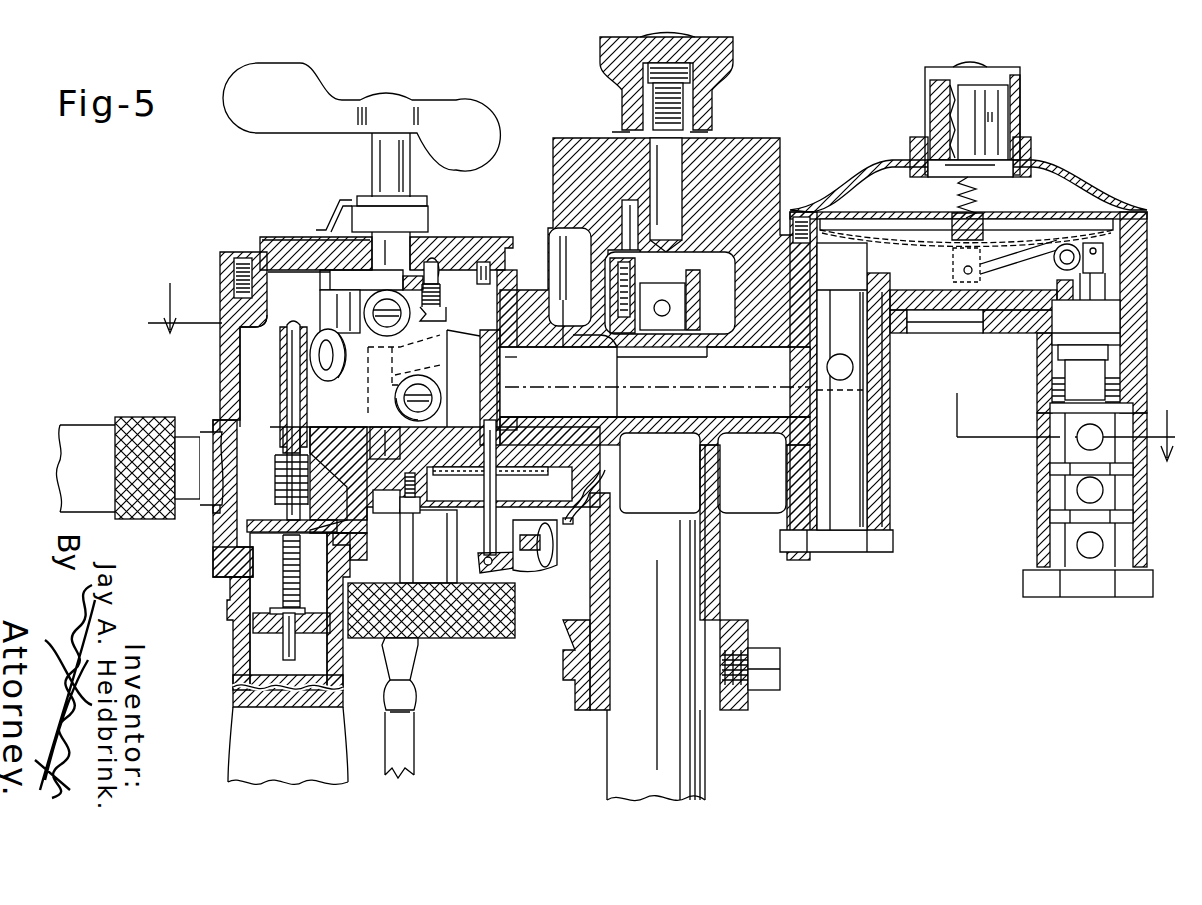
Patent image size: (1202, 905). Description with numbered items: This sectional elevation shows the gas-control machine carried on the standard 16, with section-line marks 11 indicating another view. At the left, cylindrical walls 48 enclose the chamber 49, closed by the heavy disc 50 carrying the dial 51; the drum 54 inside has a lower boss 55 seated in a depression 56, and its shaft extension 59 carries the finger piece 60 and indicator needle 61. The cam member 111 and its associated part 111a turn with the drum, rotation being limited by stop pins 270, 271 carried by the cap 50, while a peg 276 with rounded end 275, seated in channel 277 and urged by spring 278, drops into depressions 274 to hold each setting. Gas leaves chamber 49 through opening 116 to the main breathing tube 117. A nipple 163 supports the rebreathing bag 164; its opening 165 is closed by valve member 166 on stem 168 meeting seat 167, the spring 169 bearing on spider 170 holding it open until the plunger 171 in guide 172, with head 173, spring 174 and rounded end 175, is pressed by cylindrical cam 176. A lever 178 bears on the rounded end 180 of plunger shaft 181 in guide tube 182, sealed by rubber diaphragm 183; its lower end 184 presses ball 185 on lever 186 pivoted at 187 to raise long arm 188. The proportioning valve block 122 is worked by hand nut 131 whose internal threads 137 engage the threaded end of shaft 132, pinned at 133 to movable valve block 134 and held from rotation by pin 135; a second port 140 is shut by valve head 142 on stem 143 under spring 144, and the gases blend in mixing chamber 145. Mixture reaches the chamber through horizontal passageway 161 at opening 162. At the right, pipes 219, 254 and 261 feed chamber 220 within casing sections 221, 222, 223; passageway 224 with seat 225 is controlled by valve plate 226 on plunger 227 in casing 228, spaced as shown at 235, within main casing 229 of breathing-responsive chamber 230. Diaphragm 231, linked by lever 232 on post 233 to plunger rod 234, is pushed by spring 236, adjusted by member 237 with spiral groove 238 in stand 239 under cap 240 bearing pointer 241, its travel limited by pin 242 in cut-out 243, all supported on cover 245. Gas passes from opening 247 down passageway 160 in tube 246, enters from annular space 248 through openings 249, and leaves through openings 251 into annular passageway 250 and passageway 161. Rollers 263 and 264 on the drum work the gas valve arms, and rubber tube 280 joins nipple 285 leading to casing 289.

The section line 11- 11 is at (658, 384).
The standard 16 is at (690, 748).
The cylindrical walls 48 is at (220, 300).
The chamber 49 is at (240, 376).
The closure disc 50 is at (266, 246).
The dial 51 is at (293, 237).
The drum 54 is at (434, 375).
The lower boss 55 is at (385, 440).
The supporting depression 56 is at (402, 510).
The shaft extension 59 is at (375, 153).
The operating finger piece 60 is at (302, 80).
The indicator needle 61 is at (334, 202).
The cam member 111 is at (333, 272).
The valve block 111a is at (325, 303).
The opening 116 is at (210, 432).
The main breathing tube 117 is at (198, 516).
The valve block 122 is at (778, 149).
The hand nut 131 is at (735, 45).
The shaft 132 is at (684, 152).
The pin 133 is at (675, 313).
The valve block 134 is at (715, 300).
The pin 135 is at (692, 95).
The internal threads 137 is at (692, 78).
The second port 140 is at (625, 215).
The valve head 142 is at (612, 233).
The valve stem 143 is at (592, 272).
The spring 144 is at (594, 288).
The mixing chamber 145 is at (705, 326).
The vertical passageway 160 is at (855, 464).
The horizontal passageway 161 is at (758, 415).
The opening 162 is at (572, 352).
The nipple 163 is at (262, 597).
The rebreathing bag 164 is at (232, 745).
The opening 165 is at (235, 553).
The valve member 166 is at (320, 520).
The valve seat 167 is at (350, 540).
The valve stem 168 is at (285, 640).
The spring 169 is at (262, 613).
The spider 170 is at (307, 630).
The plunger 171 is at (290, 408).
The guide 172 is at (281, 390).
The head 173 is at (278, 462).
The spring 174 is at (278, 493).
The rounded end 175 is at (284, 326).
The cylindrical cam member 176 is at (400, 322).
The lever 178 is at (494, 322).
The rounded end 180 is at (440, 348).
The plunger shaft 181 is at (508, 377).
The guide tube 182 is at (508, 393).
The rubber diaphragm 183 is at (555, 472).
The lower end 184 is at (482, 555).
The ball 185 is at (508, 567).
The lever 186 is at (550, 568).
The pivot 187 is at (560, 552).
The long arm 188 is at (565, 543).
The pipe 219 is at (1080, 437).
The chamber 220 is at (1050, 507).
The casing section 221 is at (1040, 413).
The casing section 222 is at (1040, 474).
The casing section 223 is at (1033, 567).
The passageway 224 is at (1048, 372).
The annular valve seat 225 is at (1050, 369).
The valve plate 226 is at (1055, 354).
The plunger 227 is at (1055, 339).
The cylindrical casing 228 is at (1055, 323).
The main casing 229 is at (820, 250).
The breathing-responsive valve chamber 230 is at (924, 325).
The diaphragm 231 is at (1090, 233).
The lever 232 is at (1018, 248).
The post 233 is at (953, 258).
The plunger rod 234 is at (1100, 240).
The spacing 235 is at (1060, 300).
The spring 236 is at (958, 197).
The adjusting member 237 is at (1017, 84).
The spiral groove 238 is at (950, 105).
The cylindrical stand 239 is at (945, 92).
The cap 240 is at (938, 67).
The pointer 241 is at (915, 128).
The pin 242 is at (992, 118).
The cut-out portion 243 is at (990, 108).
The cover construction 245 is at (1058, 170).
The tubular casing 246 is at (877, 367).
The upper opening 247 is at (835, 275).
The annular space 248 is at (880, 498).
The openings 249 is at (870, 483).
The second annular passageway 250 is at (880, 400).
The openings 251 is at (808, 397).
The pipe 254 is at (1080, 548).
The pipe 261 is at (1080, 487).
The valve operating roller 263 is at (432, 413).
The roller valve operator 264 is at (343, 365).
The stop pin 270 is at (484, 258).
The stop pin 271 is at (334, 279).
The depressions 274 is at (416, 282).
The rounded end 275 is at (436, 252).
The peg 276 is at (442, 290).
The channel 277 is at (442, 303).
The spring 278 is at (447, 317).
The rubber tube 280 is at (415, 748).
The nipple 285 is at (408, 645).
The casing 289 is at (513, 640).